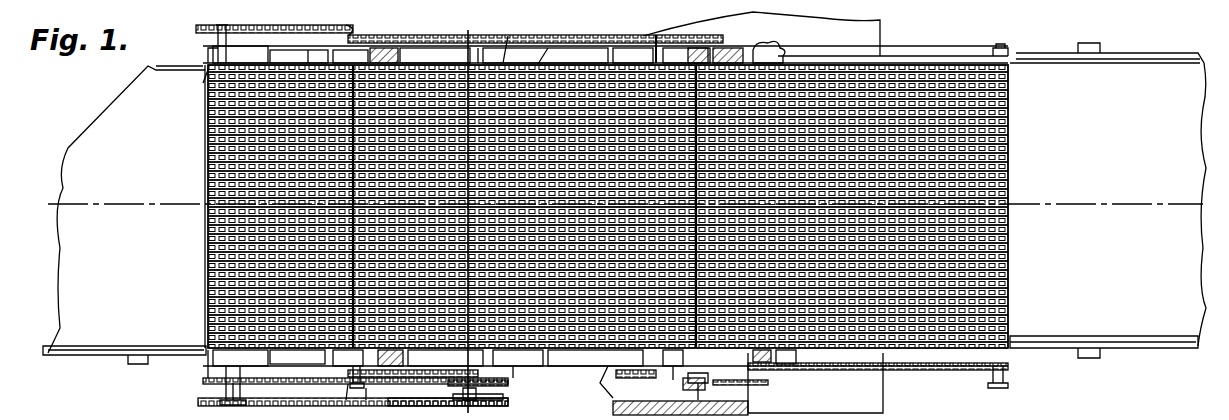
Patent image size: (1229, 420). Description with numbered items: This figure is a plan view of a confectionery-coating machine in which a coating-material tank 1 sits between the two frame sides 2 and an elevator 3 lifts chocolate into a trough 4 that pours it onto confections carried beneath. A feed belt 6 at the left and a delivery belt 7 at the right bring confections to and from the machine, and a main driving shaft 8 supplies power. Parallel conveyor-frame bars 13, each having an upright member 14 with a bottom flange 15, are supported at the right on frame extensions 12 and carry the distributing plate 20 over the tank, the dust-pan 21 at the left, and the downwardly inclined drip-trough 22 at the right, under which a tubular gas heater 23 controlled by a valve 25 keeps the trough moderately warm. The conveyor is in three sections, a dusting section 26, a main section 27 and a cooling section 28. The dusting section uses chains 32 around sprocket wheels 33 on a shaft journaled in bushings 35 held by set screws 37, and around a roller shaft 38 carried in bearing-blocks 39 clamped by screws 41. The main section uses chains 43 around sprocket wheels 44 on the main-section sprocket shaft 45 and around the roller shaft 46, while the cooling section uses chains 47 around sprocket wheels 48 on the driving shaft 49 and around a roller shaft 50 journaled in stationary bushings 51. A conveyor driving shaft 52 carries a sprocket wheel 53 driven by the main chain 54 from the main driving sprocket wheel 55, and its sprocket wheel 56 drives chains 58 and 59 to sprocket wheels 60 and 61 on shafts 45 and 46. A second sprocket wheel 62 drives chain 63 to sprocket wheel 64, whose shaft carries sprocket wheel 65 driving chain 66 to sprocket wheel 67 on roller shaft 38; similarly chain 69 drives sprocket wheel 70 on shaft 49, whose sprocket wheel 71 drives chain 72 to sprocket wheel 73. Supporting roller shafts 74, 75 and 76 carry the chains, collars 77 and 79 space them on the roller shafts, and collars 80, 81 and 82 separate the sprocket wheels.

The coating-material tank 1 is at (598, 380).
The frame sides 2 is at (728, 382).
The elevator 3 is at (540, 219).
The trough 4 is at (464, 215).
The feed conveyor belt 6 is at (118, 100).
The delivery conveyor belt 7 is at (1042, 62).
The main driving shaft 8 is at (218, 385).
The frame extensions 12 is at (868, 34).
The conveyor-frame bars 13 is at (795, 52).
The upright member 14 is at (530, 56).
The flange 15 is at (565, 50).
The distributing plate 20 is at (610, 60).
The dust-pan 21 is at (200, 344).
The drip-trough 22 is at (905, 55).
The heater 23 is at (760, 345).
The valve 25 is at (760, 35).
The first conveyor section 26 is at (200, 258).
The second conveyor section 27 is at (490, 56).
The third conveyor section 28 is at (1002, 160).
The chains 32 is at (200, 160).
The sprocket wheels 33 is at (200, 204).
The bushings 35 is at (200, 80).
The set screws 37 is at (232, 42).
The roller shaft 38 is at (370, 22).
The bearing-block 39 is at (380, 30).
The clamping screws 41 is at (322, 42).
The chains 43 is at (560, 350).
The sprocket wheels 44 is at (350, 56).
The main-section sprocket shaft 45 is at (360, 398).
The main-section roller shaft 46 is at (685, 378).
The chains 47 is at (1002, 305).
The sprocket wheels 48 is at (672, 348).
The cooling-section driving shaft 49 is at (695, 372).
The roller shaft 50 is at (1000, 352).
The stationary bushings 51 is at (985, 345).
The conveyor driving shaft 52 is at (480, 390).
The conveyor-driving sprocket wheel 53 is at (520, 392).
The main driving sprocket chain 54 is at (200, 62).
The main driving sprocket wheel 55 is at (195, 396).
The sprocket wheel 56 is at (430, 358).
The chain 58 is at (400, 370).
The chain 59 is at (628, 372).
The sprocket wheel 60 is at (348, 369).
The sprocket wheel 61 is at (680, 410).
The second sprocket wheel 62 is at (395, 405).
The chain 63 is at (340, 398).
The sprocket wheel 64 is at (208, 372).
The sprocket wheel 65 is at (200, 32).
The chain 66 is at (245, 20).
The sprocket wheel 67 is at (345, 20).
The chain 69 is at (481, 40).
The sprocket wheel 70 is at (708, 38).
The second sprocket wheel 71 is at (735, 365).
The chain 72 is at (838, 362).
The sprocket wheel 73 is at (990, 372).
The supporting roller shafts 74 is at (299, 206).
The supporting roller shafts 75 is at (563, 206).
The supporting roller shafts 76 is at (952, 46).
The collars 77 is at (200, 287).
The collars 79 is at (660, 55).
The collars 80 is at (314, 56).
The collars 81 is at (660, 357).
The collars 82 is at (1002, 265).